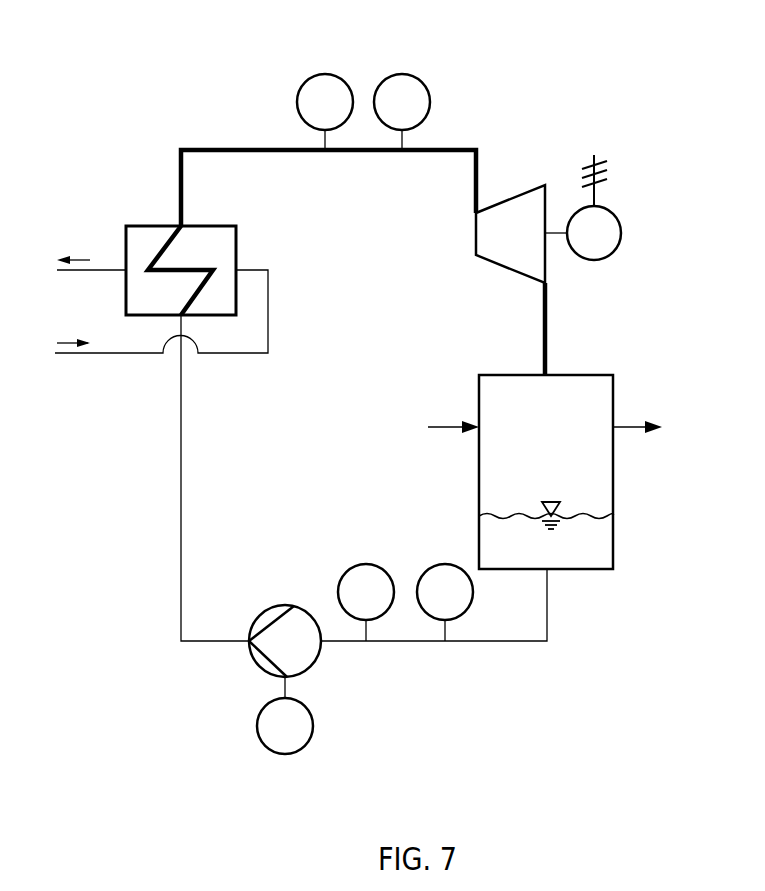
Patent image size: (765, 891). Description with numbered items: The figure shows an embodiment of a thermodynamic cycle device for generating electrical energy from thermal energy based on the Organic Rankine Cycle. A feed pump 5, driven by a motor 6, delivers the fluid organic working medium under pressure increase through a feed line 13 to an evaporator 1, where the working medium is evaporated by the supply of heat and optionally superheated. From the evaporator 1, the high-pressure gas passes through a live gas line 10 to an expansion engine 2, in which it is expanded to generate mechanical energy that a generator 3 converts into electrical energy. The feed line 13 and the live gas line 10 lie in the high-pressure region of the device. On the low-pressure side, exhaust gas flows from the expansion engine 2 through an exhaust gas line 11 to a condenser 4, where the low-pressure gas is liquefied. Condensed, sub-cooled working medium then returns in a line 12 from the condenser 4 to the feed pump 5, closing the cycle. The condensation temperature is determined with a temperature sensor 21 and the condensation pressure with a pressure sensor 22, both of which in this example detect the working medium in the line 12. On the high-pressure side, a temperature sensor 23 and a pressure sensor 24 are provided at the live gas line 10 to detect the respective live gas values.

The evaporator 1 is at (136, 222).
The expansion engine 2 is at (514, 198).
The generator 3 is at (621, 233).
The condenser 4 is at (613, 395).
The feed pump 5 is at (316, 662).
The motor 6 is at (313, 726).
The live gas line 10 is at (468, 142).
The exhaust gas line 11 is at (549, 325).
The line 12 is at (518, 645).
The feed line 13 is at (205, 645).
The temperature sensor 21 is at (380, 566).
The pressure sensor 22 is at (458, 566).
The temperature sensor 23 is at (414, 76).
The pressure sensor 24 is at (338, 76).